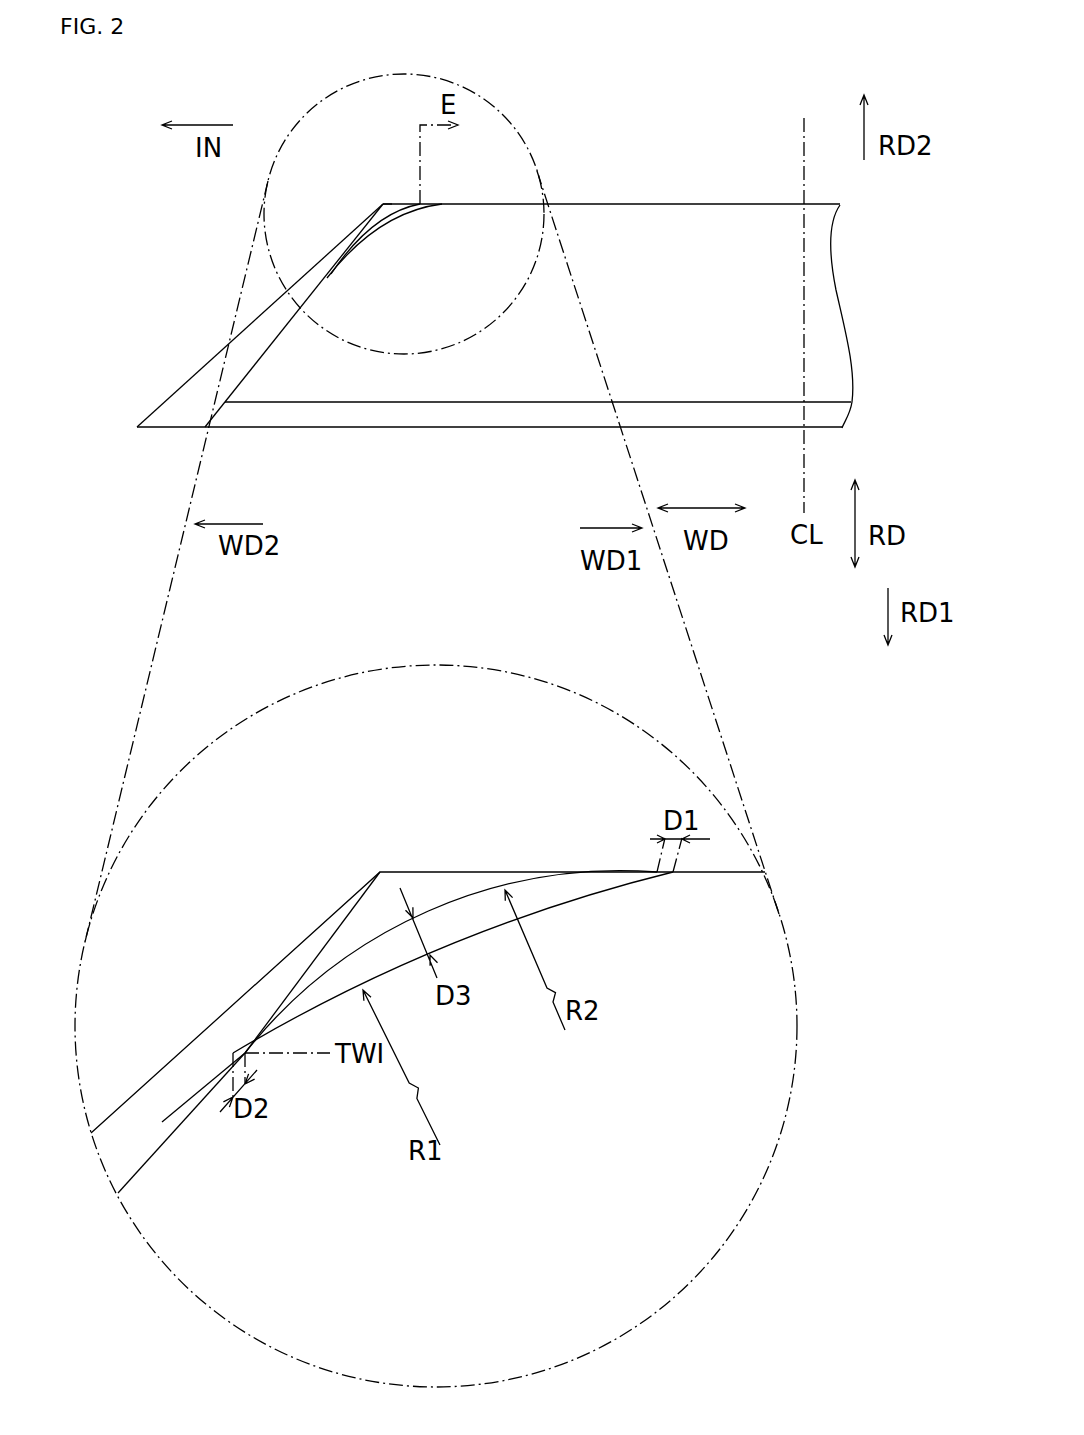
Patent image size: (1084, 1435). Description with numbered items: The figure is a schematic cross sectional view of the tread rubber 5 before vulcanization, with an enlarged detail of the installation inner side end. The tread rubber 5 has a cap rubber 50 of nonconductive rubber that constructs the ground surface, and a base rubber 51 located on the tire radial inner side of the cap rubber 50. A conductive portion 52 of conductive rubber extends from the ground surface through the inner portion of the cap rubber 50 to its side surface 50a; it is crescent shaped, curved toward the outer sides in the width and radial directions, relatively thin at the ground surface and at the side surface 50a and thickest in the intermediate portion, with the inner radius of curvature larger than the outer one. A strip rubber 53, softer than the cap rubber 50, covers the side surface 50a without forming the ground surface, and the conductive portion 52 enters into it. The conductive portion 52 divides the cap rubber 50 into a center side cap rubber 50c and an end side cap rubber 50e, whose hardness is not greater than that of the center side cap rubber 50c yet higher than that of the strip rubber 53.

The tread rubber 5 is at (421, 438).
The cap rubber 50 is at (712, 213).
The side surface 50a is at (240, 383).
The center side cap rubber 50c is at (468, 293).
The end side cap rubber 50e is at (386, 201).
The base rubber 51 is at (481, 406).
The conductive portion 52 is at (405, 214).
The strip rubber 53 is at (176, 396).